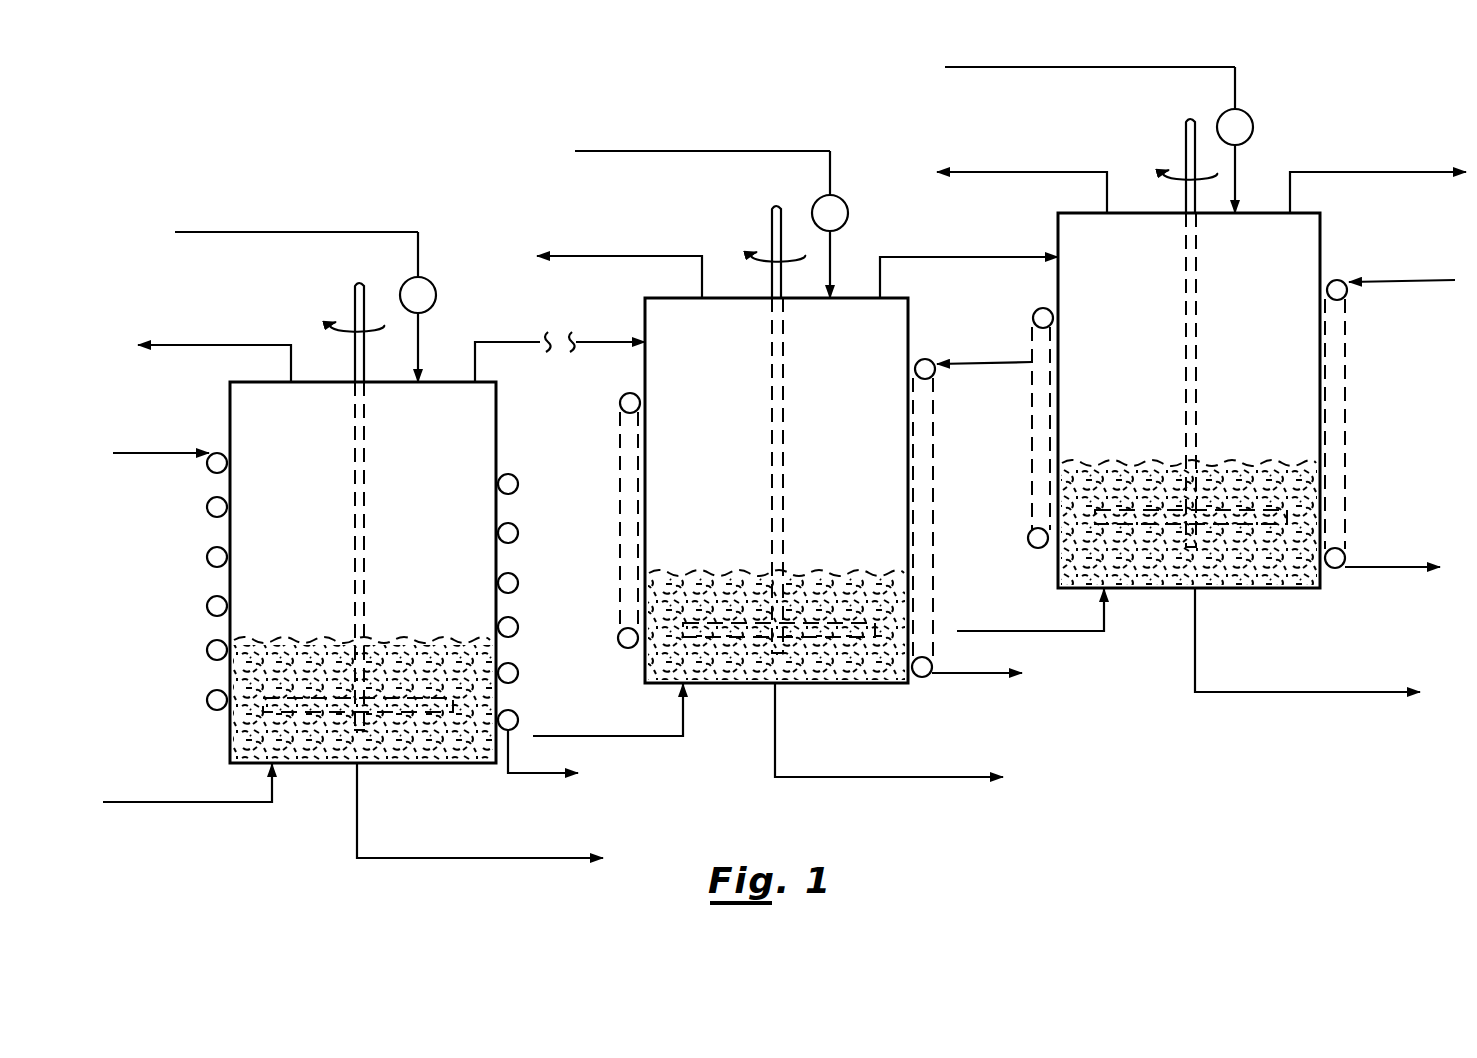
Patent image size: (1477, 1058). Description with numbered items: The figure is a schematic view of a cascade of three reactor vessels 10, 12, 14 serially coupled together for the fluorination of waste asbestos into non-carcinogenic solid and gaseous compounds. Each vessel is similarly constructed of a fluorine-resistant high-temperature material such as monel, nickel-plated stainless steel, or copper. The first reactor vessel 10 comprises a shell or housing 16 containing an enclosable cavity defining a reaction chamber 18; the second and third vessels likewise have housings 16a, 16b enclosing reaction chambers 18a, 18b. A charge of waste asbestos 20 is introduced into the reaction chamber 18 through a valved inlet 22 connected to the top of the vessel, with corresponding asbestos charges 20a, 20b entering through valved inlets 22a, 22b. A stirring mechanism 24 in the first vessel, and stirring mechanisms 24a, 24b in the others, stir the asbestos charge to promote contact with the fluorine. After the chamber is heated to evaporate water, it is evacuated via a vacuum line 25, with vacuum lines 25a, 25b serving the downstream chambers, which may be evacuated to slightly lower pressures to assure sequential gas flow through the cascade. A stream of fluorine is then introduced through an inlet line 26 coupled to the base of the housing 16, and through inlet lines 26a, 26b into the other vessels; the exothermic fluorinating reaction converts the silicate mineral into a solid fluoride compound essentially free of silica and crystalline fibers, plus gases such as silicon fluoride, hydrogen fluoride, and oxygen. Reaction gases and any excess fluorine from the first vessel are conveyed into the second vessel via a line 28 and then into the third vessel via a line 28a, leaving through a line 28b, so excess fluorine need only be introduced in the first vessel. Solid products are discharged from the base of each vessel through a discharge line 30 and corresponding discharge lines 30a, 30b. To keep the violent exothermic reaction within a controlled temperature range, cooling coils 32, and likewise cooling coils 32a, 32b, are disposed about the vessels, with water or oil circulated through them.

The reactor vessel 10 is at (228, 523).
The reactor vessel 12 is at (645, 378).
The reactor vessel 14 is at (1058, 298).
The shell or housing 16 is at (496, 420).
The shell or housing 16a is at (908, 350).
The shell or housing 16b is at (1320, 268).
The reaction chamber 18 is at (363, 572).
The reaction chamber 18a is at (776, 490).
The reaction chamber 18b is at (1189, 400).
The charge of waste asbestos 20 is at (265, 640).
The charge of waste asbestos 20a is at (703, 572).
The charge of waste asbestos 20b is at (1098, 462).
The valved inlet 22 is at (421, 246).
The valved inlet 22a is at (830, 170).
The valved inlet 22b is at (1237, 90).
The stirring mechanism 24 is at (355, 287).
The stirring mechanism 24a is at (770, 210).
The stirring mechanism 24b is at (1185, 127).
The vacuum line 25 is at (215, 350).
The vacuum line 25a is at (632, 258).
The vacuum line 25b is at (1027, 175).
The inlet line 26 is at (205, 805).
The inlet line 26a is at (647, 740).
The inlet line 26b is at (1017, 633).
The line 28 is at (490, 342).
The line 28a is at (992, 259).
The line 28b is at (1350, 175).
The discharge line 30 is at (477, 862).
The discharge line 30a is at (900, 780).
The discharge line 30b is at (1305, 695).
The cooling coils 32 is at (208, 648).
The cooling coils 32a is at (620, 634).
The cooling coils 32b is at (1030, 535).